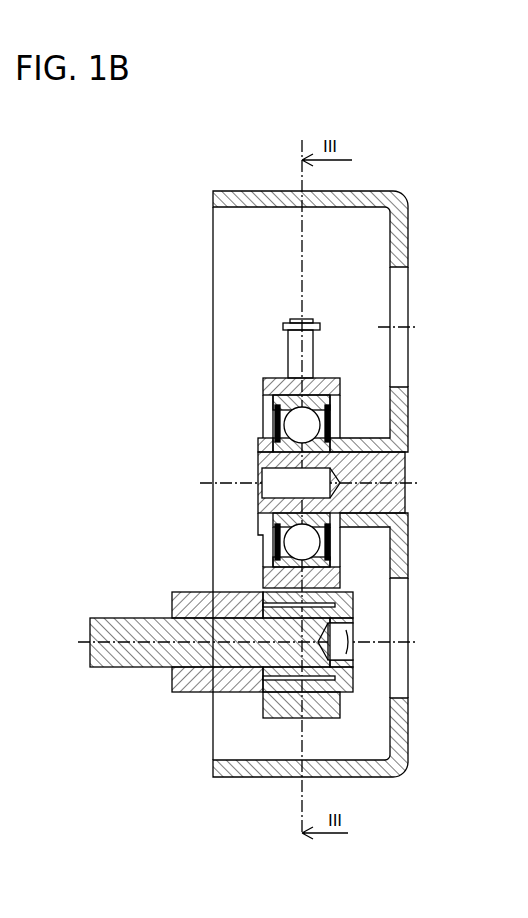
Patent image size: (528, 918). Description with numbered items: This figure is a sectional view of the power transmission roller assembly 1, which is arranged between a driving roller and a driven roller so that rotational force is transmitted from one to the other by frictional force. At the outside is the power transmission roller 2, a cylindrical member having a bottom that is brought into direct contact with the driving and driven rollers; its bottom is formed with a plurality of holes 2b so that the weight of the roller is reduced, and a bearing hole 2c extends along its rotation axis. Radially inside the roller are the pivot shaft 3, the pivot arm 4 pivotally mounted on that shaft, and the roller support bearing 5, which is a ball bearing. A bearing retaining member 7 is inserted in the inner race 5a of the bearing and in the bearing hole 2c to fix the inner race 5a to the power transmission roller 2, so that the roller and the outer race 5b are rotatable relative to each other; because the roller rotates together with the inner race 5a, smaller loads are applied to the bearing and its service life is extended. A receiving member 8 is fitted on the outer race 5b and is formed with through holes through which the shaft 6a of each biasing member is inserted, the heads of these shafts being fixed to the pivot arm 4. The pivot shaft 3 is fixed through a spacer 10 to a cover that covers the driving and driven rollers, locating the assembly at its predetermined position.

The power transmission roller assembly 1 is at (341, 461).
The power transmission roller 2 is at (341, 461).
The holes 2b is at (398, 307).
The bearing hole 2c is at (383, 465).
The pivot shaft 3 is at (133, 637).
The pivot arm 4 is at (262, 700).
The roller support bearing 5 is at (317, 448).
The inner race 5a is at (382, 528).
The outer race 5b is at (330, 563).
The shaft 6a is at (306, 357).
The bearing retaining member 7 is at (258, 445).
The receiving member 8 is at (275, 377).
The spacer 10 is at (198, 682).